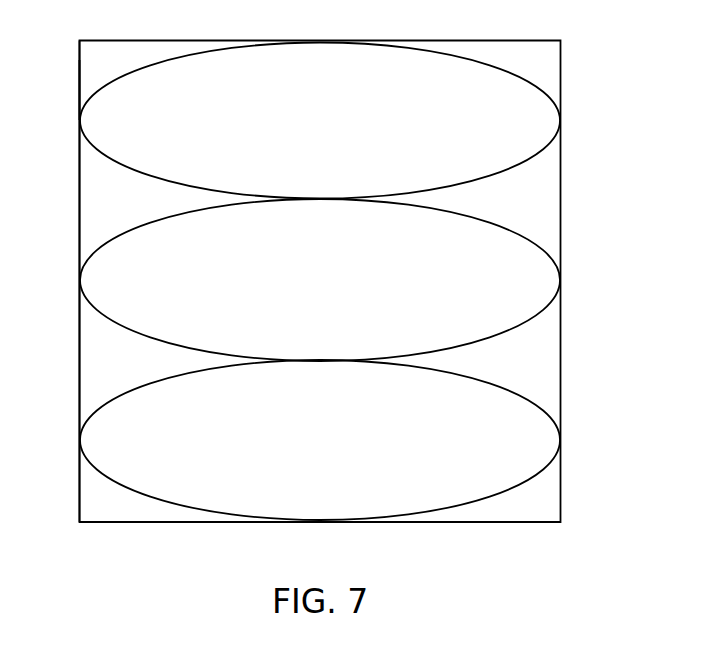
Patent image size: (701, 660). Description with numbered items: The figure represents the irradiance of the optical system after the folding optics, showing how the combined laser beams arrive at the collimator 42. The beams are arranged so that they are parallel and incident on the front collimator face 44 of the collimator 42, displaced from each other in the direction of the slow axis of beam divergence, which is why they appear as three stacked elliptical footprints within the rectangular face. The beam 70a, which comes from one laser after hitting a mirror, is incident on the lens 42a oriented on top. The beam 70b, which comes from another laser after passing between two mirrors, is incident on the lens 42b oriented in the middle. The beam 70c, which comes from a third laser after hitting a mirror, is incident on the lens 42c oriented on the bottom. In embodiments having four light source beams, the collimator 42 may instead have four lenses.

The collimator 42 is at (560, 52).
The front collimator face 44 is at (87, 62).
The lens 42a is at (102, 160).
The lens 42b is at (101, 324).
The lens 42c is at (103, 480).
The beam 70a is at (533, 102).
The beam 70b is at (533, 262).
The beam 70c is at (533, 422).